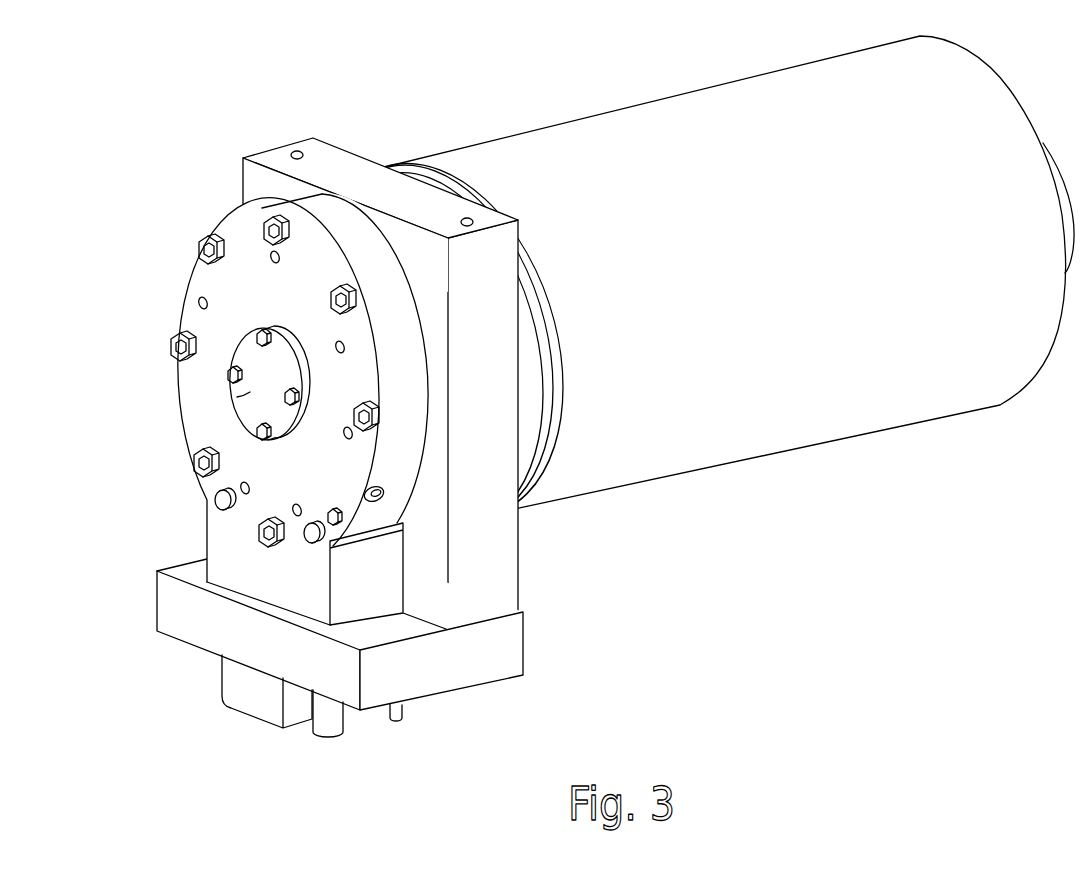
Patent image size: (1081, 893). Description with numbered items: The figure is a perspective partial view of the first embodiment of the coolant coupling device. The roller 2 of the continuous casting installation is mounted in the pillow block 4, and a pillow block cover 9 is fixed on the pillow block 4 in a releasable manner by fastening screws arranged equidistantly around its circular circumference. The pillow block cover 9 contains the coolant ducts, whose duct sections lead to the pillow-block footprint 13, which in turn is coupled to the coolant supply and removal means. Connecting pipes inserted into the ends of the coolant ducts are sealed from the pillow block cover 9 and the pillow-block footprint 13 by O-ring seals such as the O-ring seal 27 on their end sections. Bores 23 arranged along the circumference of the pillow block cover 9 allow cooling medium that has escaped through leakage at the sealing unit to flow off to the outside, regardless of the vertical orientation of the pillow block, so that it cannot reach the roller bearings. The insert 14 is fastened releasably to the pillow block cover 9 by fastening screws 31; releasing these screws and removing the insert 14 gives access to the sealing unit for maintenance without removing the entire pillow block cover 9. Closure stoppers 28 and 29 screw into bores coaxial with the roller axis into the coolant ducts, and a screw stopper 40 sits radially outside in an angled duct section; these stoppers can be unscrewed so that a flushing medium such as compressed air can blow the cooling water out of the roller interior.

The roller 2 is at (743, 123).
The pillow block 4 is at (497, 535).
The pillow block cover 9 is at (190, 324).
The pillow-block footprint 13 is at (383, 490).
The insert 14 is at (250, 391).
The bores 23 is at (203, 303).
The O-ring seal 27 is at (200, 247).
The closure stopper 28 is at (218, 503).
The closure stopper 29 is at (312, 545).
The fastening screws 31 is at (258, 431).
The screw stopper 40 is at (488, 623).